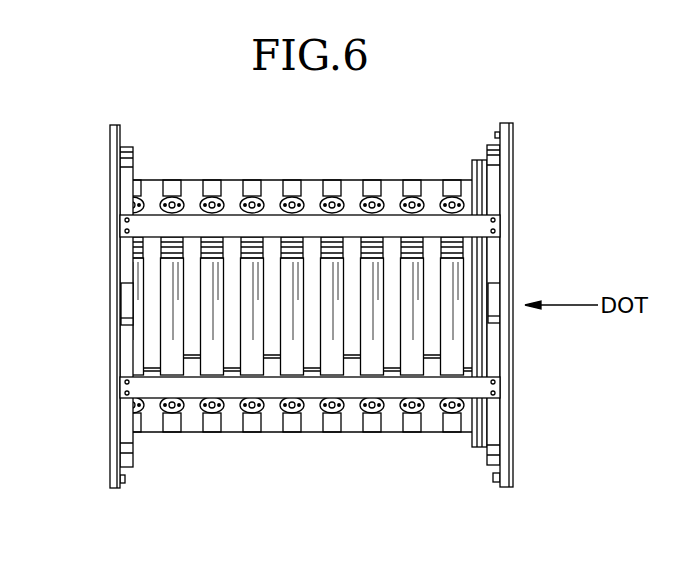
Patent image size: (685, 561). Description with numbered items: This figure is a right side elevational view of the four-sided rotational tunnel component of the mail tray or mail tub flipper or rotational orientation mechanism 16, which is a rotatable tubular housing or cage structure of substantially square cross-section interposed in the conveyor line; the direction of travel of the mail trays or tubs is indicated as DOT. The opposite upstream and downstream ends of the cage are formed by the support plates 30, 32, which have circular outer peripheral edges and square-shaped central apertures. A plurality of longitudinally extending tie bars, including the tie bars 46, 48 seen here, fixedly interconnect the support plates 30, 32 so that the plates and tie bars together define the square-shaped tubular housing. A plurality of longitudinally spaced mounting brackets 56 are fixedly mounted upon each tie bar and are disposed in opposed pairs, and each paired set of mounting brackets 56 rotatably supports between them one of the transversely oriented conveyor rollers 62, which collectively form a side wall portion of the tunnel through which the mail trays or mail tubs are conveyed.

The mail tray or mail tub flipper or rotational orientation mechanism 16 is at (519, 130).
The support plate 30 is at (505, 416).
The support plate 32 is at (117, 286).
The tie bar 46 is at (465, 226).
The tie bar 48 is at (472, 388).
The mounting brackets 56 is at (213, 188).
The conveyor rollers 62 is at (173, 285).